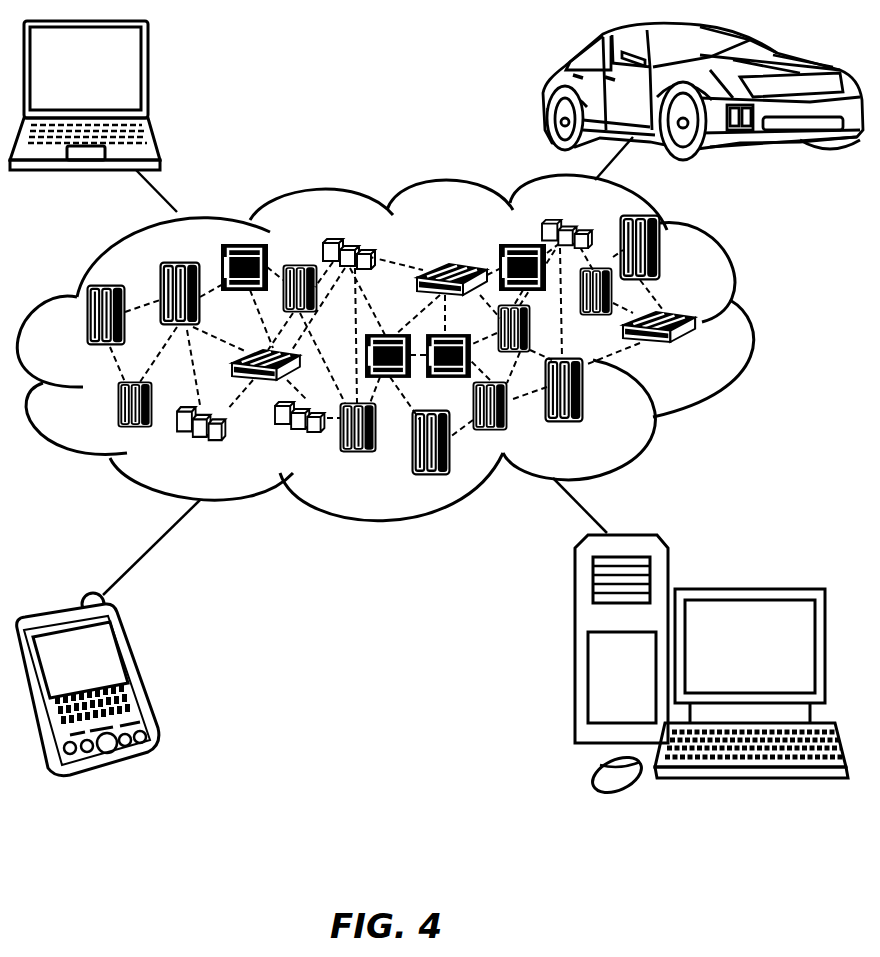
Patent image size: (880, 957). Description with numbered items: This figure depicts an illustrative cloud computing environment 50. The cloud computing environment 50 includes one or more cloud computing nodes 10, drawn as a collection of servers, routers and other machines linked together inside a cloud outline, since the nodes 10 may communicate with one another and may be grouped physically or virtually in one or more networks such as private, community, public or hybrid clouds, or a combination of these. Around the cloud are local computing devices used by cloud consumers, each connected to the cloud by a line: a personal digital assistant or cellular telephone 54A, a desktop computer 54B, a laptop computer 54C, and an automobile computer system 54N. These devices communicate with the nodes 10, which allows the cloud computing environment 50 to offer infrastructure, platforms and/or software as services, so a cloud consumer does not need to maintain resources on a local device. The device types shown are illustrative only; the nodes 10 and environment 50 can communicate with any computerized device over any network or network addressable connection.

The cloud computing node 10 is at (695, 352).
The cloud computing environment 50 is at (745, 320).
The personal digital assistant or cellular telephone 54A is at (140, 670).
The desktop computer 54B is at (745, 589).
The laptop computer 54C is at (148, 73).
The automobile computer system 54N is at (545, 85).